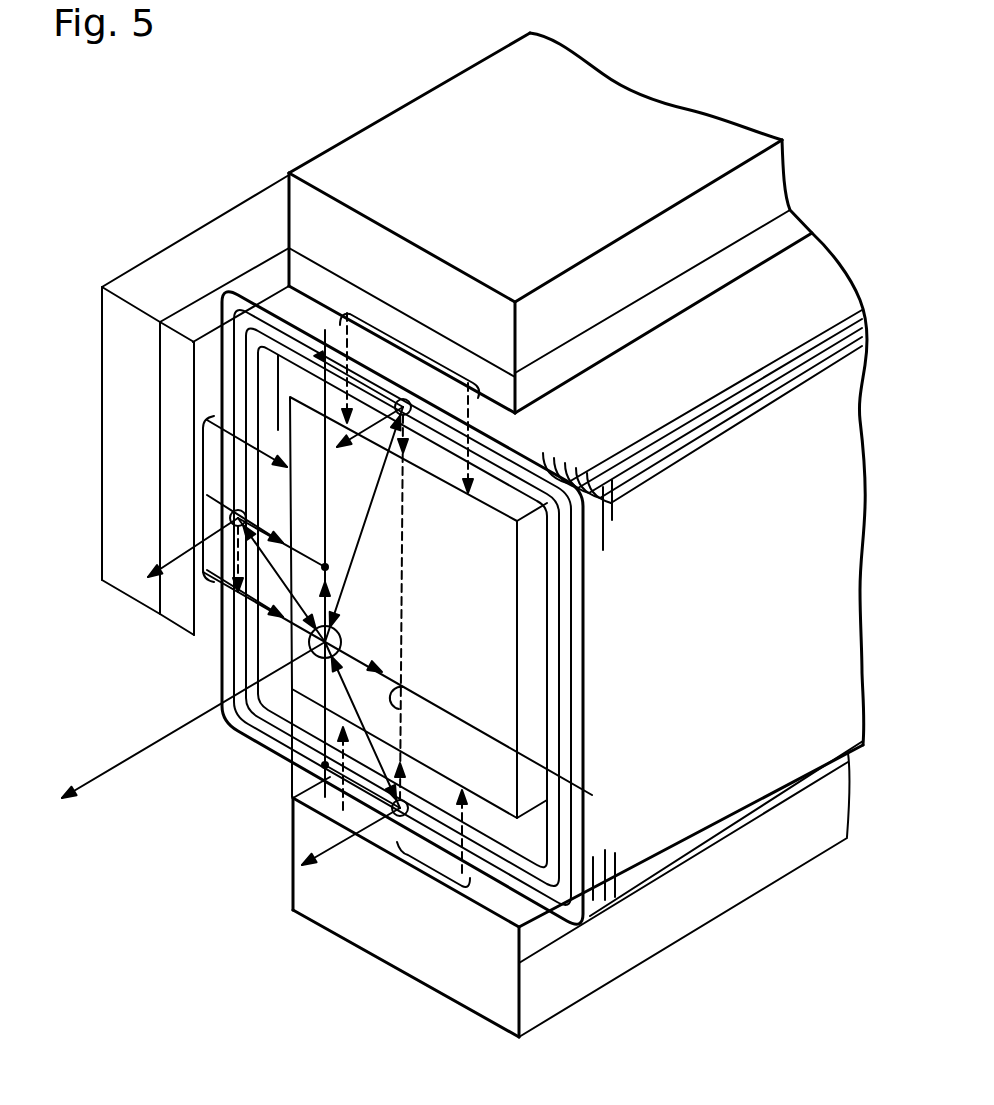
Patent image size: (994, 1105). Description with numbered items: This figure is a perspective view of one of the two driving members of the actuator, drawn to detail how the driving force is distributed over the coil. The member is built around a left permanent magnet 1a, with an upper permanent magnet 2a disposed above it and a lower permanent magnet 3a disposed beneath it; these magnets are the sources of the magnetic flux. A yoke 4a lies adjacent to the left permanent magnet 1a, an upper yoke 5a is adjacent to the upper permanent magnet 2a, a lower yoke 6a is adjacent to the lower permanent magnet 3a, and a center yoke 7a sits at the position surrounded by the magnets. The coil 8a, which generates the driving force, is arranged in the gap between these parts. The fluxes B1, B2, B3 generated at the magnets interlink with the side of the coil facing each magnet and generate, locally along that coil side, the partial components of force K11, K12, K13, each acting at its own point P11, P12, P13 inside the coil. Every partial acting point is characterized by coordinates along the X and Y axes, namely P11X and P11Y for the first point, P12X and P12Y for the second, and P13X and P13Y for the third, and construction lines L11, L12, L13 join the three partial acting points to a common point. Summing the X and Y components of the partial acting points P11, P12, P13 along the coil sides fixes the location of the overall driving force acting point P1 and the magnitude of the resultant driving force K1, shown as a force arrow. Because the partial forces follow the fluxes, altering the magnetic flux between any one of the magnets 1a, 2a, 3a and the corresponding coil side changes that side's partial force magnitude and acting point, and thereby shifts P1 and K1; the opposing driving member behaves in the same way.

The left permanent magnet 1a is at (190, 313).
The upper permanent magnet 2a is at (287, 262).
The lower permanent magnet 3a is at (492, 928).
The yoke 4a is at (104, 325).
The upper yoke 5a is at (333, 150).
The lower yoke 6a is at (487, 1000).
The center yoke 7a is at (503, 558).
The coil 8a is at (577, 877).
The magnetic flux B1 is at (203, 492).
The magnetic flux B2 is at (413, 345).
The magnetic flux B3 is at (402, 853).
The driving force acting point P1 is at (345, 636).
The partial driving force acting point P11 is at (230, 518).
The partial driving force acting point P12 is at (412, 416).
The partial driving force acting point P13 is at (393, 813).
The X coordinate of partial acting point P11X is at (235, 592).
The Y coordinate of partial acting point P11Y is at (330, 568).
The X coordinate of partial acting point P12X is at (405, 687).
The Y coordinate of partial acting point P12Y is at (325, 362).
The X coordinate of partial acting point P13X is at (399, 709).
The Y coordinate of partial acting point P13Y is at (325, 768).
The driving force K1 is at (193, 734).
The partial component of force K11 is at (178, 547).
The partial component of force K12 is at (369, 446).
The partial component of force K13 is at (351, 854).
The line from P1 to P11 L11 is at (290, 592).
The line from P1 to P12 L12 is at (357, 537).
The line from P1 to P13 L13 is at (365, 727).
The X coordinate X is at (397, 683).
The Y coordinate Y is at (317, 563).